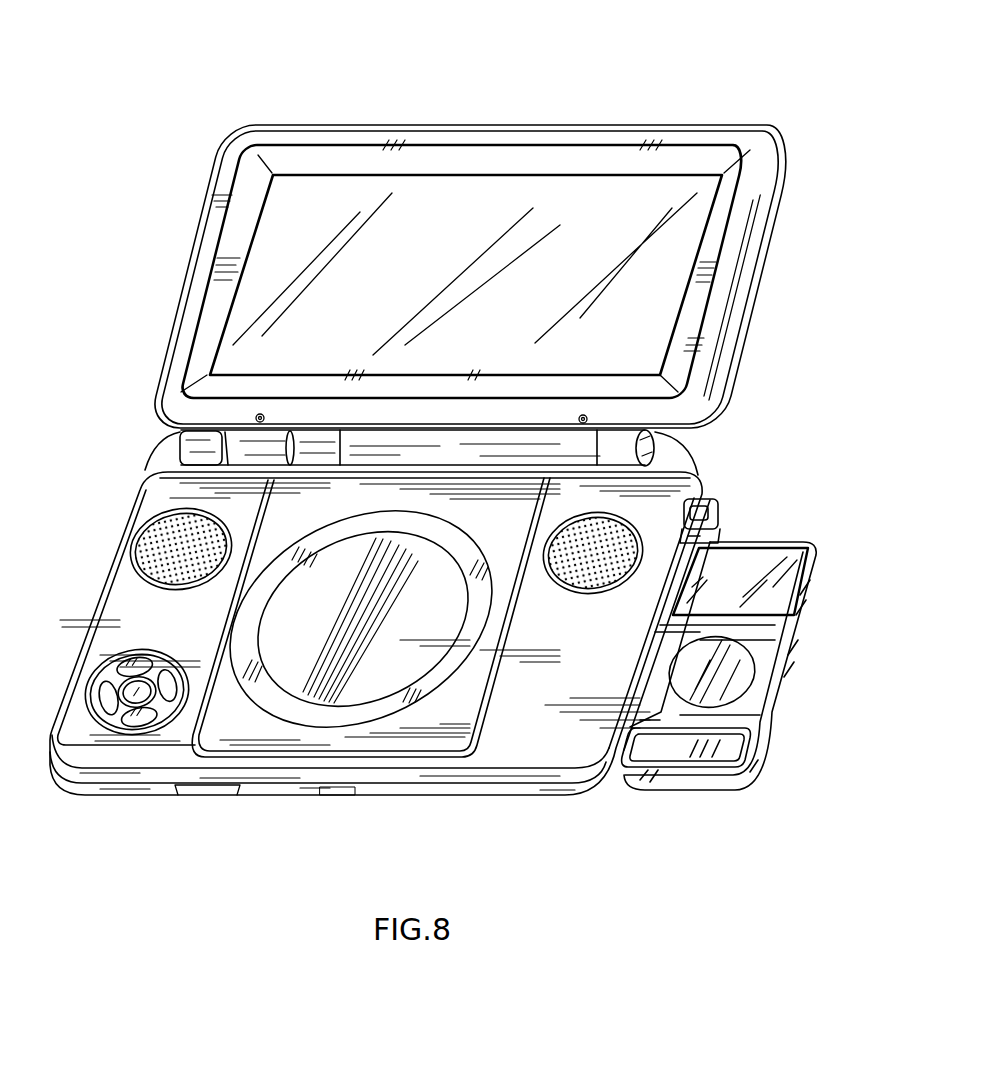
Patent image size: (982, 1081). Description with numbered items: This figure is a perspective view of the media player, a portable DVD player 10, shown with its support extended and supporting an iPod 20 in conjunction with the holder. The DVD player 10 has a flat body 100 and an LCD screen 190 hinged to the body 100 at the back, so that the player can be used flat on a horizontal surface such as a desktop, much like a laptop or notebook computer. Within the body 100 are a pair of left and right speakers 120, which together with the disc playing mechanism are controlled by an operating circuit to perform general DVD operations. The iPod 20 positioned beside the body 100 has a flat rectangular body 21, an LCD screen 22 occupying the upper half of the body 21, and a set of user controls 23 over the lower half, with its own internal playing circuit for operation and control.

The portable DVD player 10 is at (133, 71).
The LCD screen 190 is at (184, 256).
The body 100 is at (93, 610).
The speakers 120 is at (160, 545).
The iPod 20 is at (805, 522).
The body 21 is at (798, 636).
The LCD screen 22 is at (738, 565).
The user controls 23 is at (735, 677).